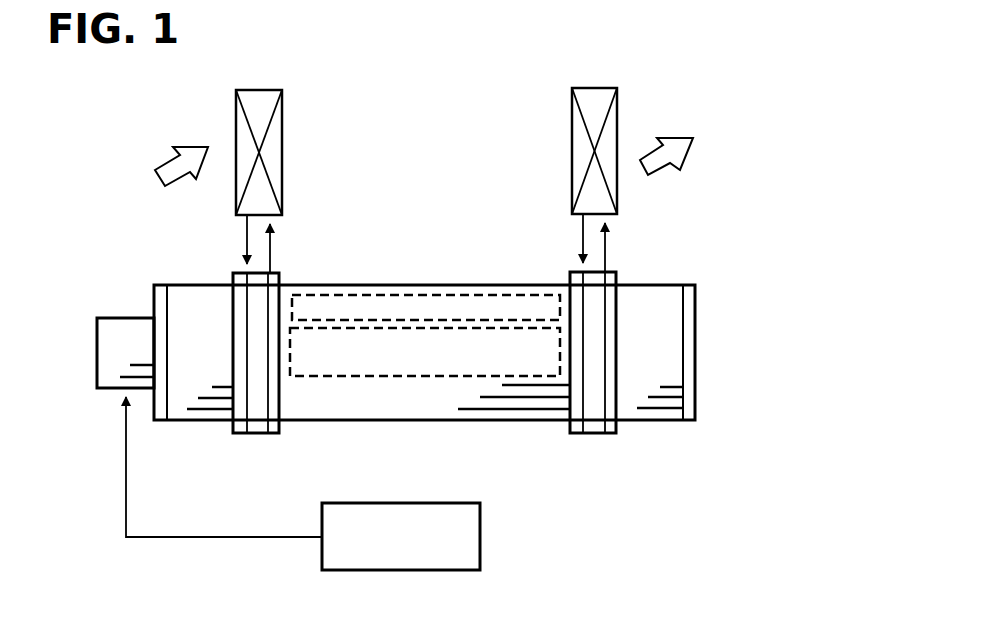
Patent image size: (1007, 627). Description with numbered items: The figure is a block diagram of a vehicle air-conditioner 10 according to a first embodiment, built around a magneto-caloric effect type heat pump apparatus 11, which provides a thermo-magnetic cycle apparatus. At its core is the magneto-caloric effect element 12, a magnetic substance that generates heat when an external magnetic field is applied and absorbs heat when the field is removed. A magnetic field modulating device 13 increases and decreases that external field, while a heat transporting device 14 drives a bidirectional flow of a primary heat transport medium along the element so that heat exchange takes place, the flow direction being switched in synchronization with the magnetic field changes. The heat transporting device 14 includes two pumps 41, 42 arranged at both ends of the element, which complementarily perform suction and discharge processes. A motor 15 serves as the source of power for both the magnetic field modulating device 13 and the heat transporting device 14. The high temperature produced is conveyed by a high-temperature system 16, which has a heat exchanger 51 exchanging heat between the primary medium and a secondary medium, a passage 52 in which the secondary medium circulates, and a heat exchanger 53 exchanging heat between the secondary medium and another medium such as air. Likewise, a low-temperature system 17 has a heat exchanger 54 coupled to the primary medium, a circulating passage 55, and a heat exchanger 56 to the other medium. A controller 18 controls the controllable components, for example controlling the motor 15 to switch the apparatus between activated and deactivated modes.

The vehicle air-conditioner 10 is at (714, 122).
The magneto-caloric effect type heat pump apparatus 11 is at (410, 208).
The magneto-caloric effect element 12 is at (343, 306).
The magnetic field modulating device 13 is at (486, 350).
The heat transporting device 14 is at (714, 262).
The motor 15 is at (130, 318).
The high-temperature system 16 is at (545, 118).
The low-temperature system 17 is at (309, 118).
The controller 18 is at (322, 530).
The pump 41 is at (641, 421).
The pump 42 is at (203, 421).
The heat exchanger 51 is at (617, 270).
The passage 52 is at (605, 247).
The heat exchanger 53 is at (617, 118).
The heat exchanger 54 is at (233, 270).
The passage 55 is at (247, 240).
The heat exchanger 56 is at (236, 133).